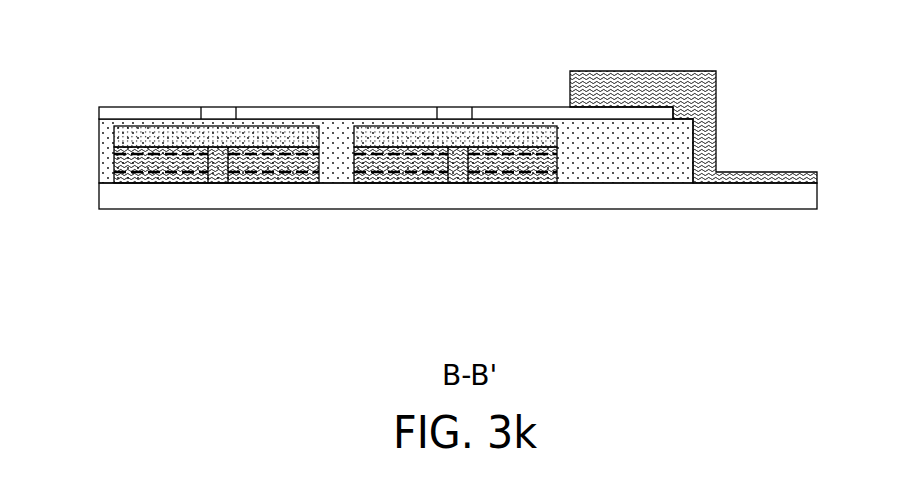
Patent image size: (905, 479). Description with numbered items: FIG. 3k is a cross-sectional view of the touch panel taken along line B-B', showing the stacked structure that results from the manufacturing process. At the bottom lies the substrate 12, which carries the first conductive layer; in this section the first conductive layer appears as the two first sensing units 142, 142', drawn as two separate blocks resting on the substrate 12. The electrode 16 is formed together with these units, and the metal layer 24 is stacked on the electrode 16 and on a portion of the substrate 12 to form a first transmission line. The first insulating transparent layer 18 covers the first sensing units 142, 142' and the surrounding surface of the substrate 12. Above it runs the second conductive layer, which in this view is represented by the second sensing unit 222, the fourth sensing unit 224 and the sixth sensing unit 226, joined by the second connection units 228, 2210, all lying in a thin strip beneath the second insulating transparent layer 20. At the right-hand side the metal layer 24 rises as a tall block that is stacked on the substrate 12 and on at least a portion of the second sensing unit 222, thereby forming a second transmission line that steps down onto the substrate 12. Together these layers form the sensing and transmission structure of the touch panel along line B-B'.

The substrate 12 is at (99, 197).
The first insulating transparent layer 18 is at (113, 137).
The second insulating transparent layer 20 is at (100, 119).
The sixth sensing unit 226 is at (135, 112).
The second connection unit 2210 is at (222, 112).
The fourth sensing unit 224 is at (332, 112).
The second connection unit 228 is at (448, 112).
The second sensing unit 222 is at (525, 112).
The first sensing unit 142' is at (216, 199).
The first sensing unit 142 is at (455, 199).
The electrode 16 is at (257, 173).
The metal layer 24 is at (716, 92).